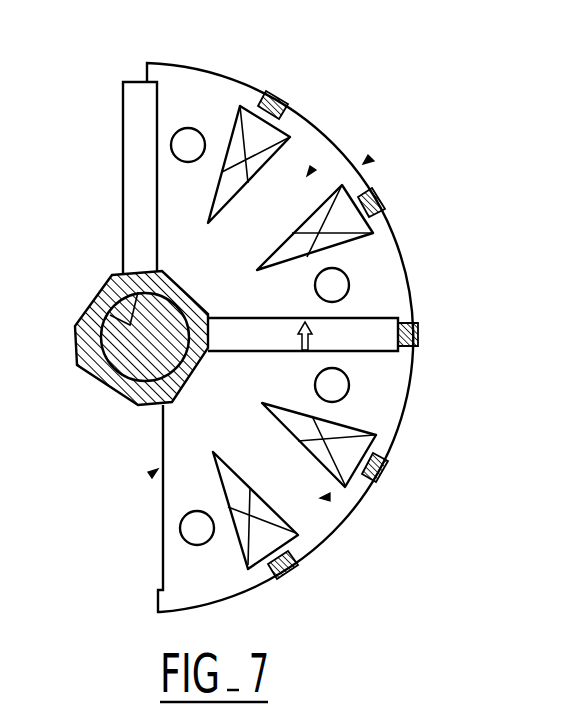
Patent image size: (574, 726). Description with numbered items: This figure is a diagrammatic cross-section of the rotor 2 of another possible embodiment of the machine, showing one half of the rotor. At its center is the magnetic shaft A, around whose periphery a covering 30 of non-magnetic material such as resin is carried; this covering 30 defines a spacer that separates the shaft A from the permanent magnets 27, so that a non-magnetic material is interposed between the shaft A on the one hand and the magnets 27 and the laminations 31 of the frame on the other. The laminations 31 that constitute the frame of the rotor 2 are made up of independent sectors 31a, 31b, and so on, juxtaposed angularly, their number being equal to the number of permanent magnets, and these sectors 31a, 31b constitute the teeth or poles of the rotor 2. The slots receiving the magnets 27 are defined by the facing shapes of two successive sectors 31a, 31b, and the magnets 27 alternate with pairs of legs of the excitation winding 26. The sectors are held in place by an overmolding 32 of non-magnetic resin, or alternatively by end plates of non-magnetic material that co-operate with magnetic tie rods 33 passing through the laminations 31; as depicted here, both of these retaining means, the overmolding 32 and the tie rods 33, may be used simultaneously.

The rotor 2 is at (155, 471).
The excitation winding 26 is at (357, 451).
The permanent magnets 27 is at (131, 123).
The covering 30 is at (118, 390).
The magnetic shaft A is at (103, 300).
The laminations 31 is at (367, 158).
The sector 31a is at (310, 172).
The sector 31b is at (328, 498).
The overmolding 32 is at (276, 102).
The magnetic tie rods 33 is at (190, 138).